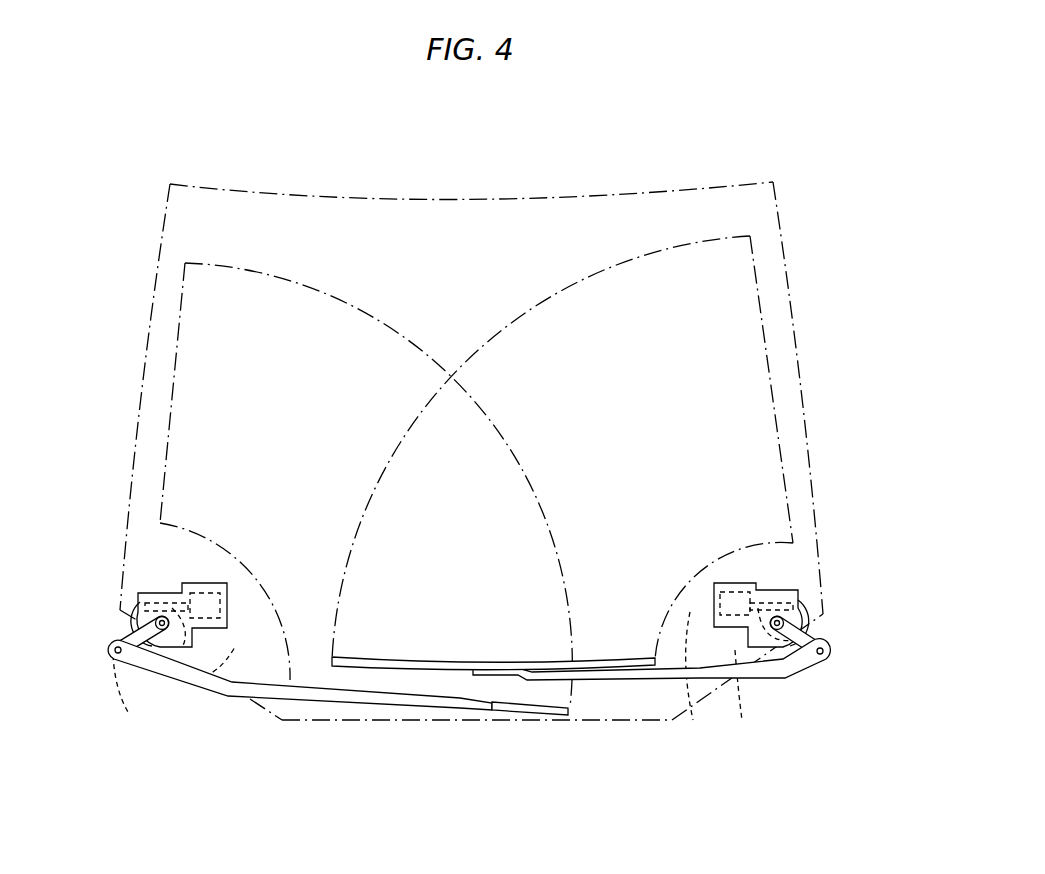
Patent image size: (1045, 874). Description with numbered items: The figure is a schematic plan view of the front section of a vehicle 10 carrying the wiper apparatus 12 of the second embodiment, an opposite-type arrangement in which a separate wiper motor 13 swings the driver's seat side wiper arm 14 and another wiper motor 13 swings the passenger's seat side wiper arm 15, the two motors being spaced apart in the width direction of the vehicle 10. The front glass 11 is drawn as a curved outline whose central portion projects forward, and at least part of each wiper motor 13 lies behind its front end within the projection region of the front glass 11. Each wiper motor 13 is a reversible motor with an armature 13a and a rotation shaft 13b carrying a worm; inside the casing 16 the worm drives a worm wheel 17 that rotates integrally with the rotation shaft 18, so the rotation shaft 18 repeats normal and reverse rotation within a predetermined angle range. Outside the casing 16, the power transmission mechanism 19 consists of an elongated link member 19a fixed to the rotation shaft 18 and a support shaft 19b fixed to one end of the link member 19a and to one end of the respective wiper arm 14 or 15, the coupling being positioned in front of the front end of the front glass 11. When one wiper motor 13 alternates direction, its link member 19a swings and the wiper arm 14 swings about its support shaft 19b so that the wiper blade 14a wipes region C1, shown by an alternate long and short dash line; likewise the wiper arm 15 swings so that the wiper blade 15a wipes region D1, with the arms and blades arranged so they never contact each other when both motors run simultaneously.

The vehicle 10 is at (153, 206).
The front glass 11 is at (226, 184).
The wiper apparatus 12 is at (470, 750).
The wiper motor 13 is at (469, 685).
The armature 13a is at (206, 620).
The rotation shaft 13b is at (168, 612).
The wiper arm 14 is at (285, 702).
The wiper blade 14a is at (528, 716).
The wiper arm 15 is at (650, 679).
The wiper blade 15a is at (407, 667).
The casing 16 is at (203, 640).
The worm wheel 17 is at (164, 650).
The rotation shaft 18 is at (164, 631).
The power transmission mechanism 19 is at (146, 660).
The link member 19a is at (148, 682).
The support shaft 19b is at (117, 661).
The wiped region C1 is at (363, 312).
The wiped region D1 is at (527, 314).